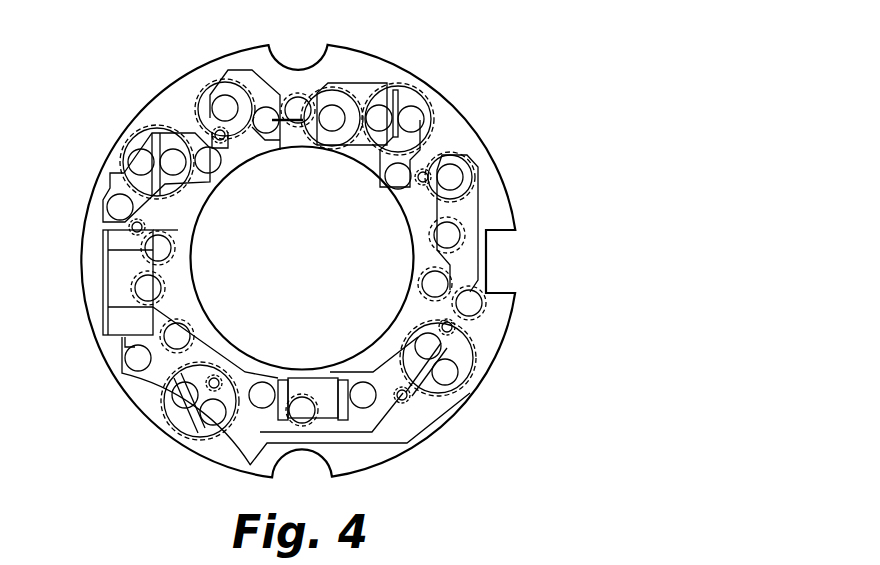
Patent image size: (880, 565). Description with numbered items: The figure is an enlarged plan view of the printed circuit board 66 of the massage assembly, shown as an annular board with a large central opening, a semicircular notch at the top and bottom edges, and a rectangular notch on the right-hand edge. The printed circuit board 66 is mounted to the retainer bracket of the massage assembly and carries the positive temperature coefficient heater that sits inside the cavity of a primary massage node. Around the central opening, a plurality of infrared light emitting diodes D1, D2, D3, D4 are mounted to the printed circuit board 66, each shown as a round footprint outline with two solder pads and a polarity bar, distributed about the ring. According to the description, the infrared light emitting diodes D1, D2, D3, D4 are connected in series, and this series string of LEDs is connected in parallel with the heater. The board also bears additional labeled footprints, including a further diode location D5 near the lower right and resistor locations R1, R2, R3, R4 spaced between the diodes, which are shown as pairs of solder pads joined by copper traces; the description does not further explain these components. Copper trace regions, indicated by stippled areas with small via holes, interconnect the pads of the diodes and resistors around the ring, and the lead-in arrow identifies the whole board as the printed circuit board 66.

The printed circuit board 66 is at (446, 92).
The infrared light emitting diode D1 is at (401, 120).
The infrared light emitting diode D2 is at (156, 180).
The infrared light emitting diode D3 is at (194, 413).
The infrared light emitting diode D4 is at (368, 341).
The light emitting diode D5 is at (314, 394).
The resistor R1 is at (431, 222).
The resistor R2 is at (329, 126).
The resistor R3 is at (237, 121).
The resistor R4 is at (178, 347).